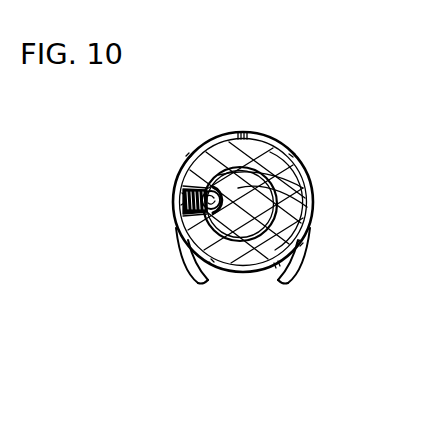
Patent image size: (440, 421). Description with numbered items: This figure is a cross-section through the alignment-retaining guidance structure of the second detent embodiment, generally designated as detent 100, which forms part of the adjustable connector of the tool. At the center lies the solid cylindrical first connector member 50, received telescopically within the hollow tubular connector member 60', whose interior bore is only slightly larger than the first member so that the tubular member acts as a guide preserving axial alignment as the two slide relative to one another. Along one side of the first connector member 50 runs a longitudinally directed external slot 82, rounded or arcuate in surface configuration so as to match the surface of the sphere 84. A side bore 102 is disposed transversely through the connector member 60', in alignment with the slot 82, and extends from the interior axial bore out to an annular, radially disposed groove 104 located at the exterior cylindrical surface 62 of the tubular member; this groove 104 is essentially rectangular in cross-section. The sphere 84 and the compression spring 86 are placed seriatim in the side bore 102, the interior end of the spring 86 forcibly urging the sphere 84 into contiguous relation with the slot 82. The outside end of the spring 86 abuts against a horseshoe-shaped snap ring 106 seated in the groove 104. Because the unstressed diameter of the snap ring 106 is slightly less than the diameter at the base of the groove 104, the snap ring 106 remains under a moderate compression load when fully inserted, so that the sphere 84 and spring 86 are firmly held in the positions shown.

The first connector member 50 is at (266, 209).
The connector member 60' is at (204, 285).
The exterior cylindrical surface 62 is at (303, 233).
The external slot 82 is at (276, 192).
The sphere 84 is at (268, 176).
The compression spring 86 is at (182, 197).
The detent embodiment 100 is at (172, 170).
The side bore 102 is at (178, 176).
The annular groove 104 is at (258, 274).
The horseshoe-shaped snap ring 106 is at (286, 146).